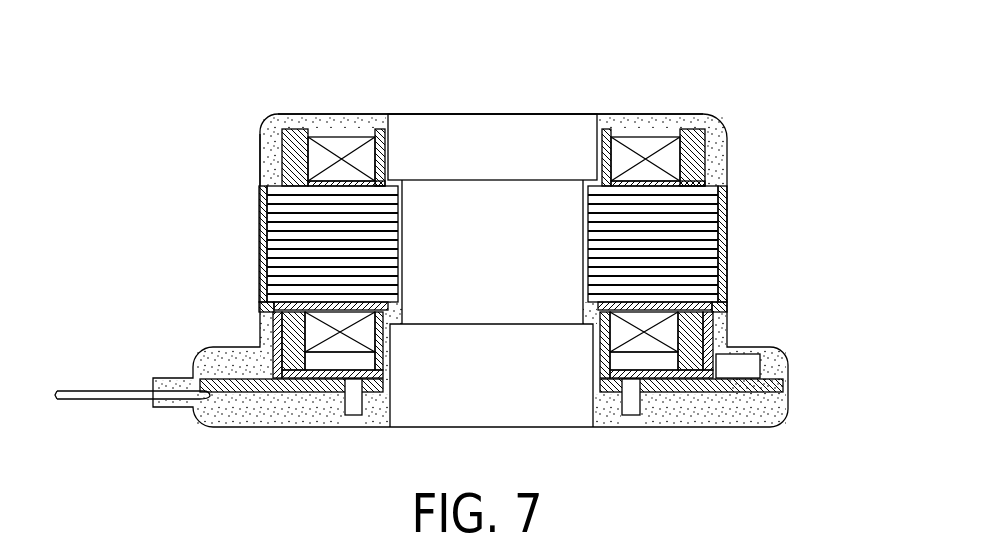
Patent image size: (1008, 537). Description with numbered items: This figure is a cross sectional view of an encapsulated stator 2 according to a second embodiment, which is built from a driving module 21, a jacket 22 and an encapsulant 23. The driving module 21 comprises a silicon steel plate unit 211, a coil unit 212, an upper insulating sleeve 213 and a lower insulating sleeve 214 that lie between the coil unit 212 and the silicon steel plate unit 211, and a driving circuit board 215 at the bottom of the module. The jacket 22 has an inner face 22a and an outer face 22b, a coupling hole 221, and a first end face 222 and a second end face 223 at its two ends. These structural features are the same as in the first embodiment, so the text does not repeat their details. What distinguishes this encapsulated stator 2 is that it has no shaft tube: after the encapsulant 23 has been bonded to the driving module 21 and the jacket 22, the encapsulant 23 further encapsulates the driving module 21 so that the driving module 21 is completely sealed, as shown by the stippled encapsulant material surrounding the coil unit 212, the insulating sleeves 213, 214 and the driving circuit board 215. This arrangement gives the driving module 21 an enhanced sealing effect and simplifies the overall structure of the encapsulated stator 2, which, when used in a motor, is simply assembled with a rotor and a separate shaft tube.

The encapsulated stator 2 is at (745, 127).
The driving module 21 is at (710, 104).
The silicon steel plate unit 211 is at (695, 239).
The coil unit 212 is at (663, 145).
The upper insulating sleeve 213 is at (700, 154).
The lower insulating sleeve 214 is at (695, 342).
The driving circuit board 215 is at (783, 389).
The jacket 22 is at (263, 248).
The inner face 22a is at (256, 267).
The outer face 22b is at (258, 245).
The coupling hole 221 is at (274, 184).
The first end face 222 is at (257, 172).
The second end face 223 is at (258, 318).
The encapsulant 23 is at (330, 114).